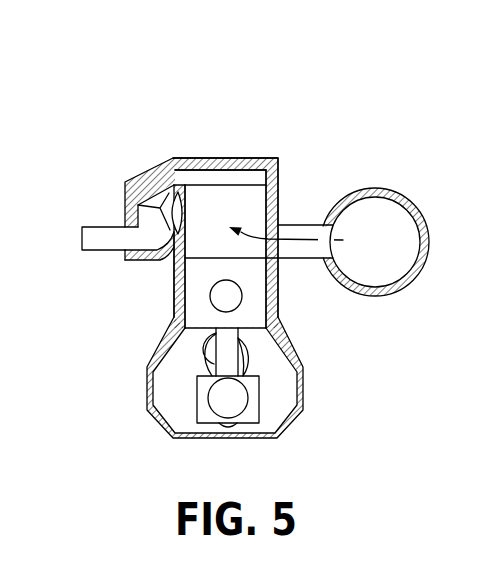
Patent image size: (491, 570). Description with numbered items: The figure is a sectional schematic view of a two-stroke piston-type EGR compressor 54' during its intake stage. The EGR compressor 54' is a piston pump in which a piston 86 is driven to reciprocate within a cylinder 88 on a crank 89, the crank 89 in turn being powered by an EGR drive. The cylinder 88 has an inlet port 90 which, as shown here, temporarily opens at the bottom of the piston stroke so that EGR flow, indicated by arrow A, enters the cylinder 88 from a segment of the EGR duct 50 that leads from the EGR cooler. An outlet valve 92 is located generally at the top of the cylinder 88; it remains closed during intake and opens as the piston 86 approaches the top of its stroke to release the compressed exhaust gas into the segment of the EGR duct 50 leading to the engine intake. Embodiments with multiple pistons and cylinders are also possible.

The EGR compressor 54' is at (246, 219).
The EGR duct 50 is at (95, 238).
The piston 86 is at (195, 289).
The cylinder 88 is at (242, 205).
The crank 89 is at (212, 356).
The inlet port 90 is at (282, 232).
The outlet valve 92 is at (162, 202).